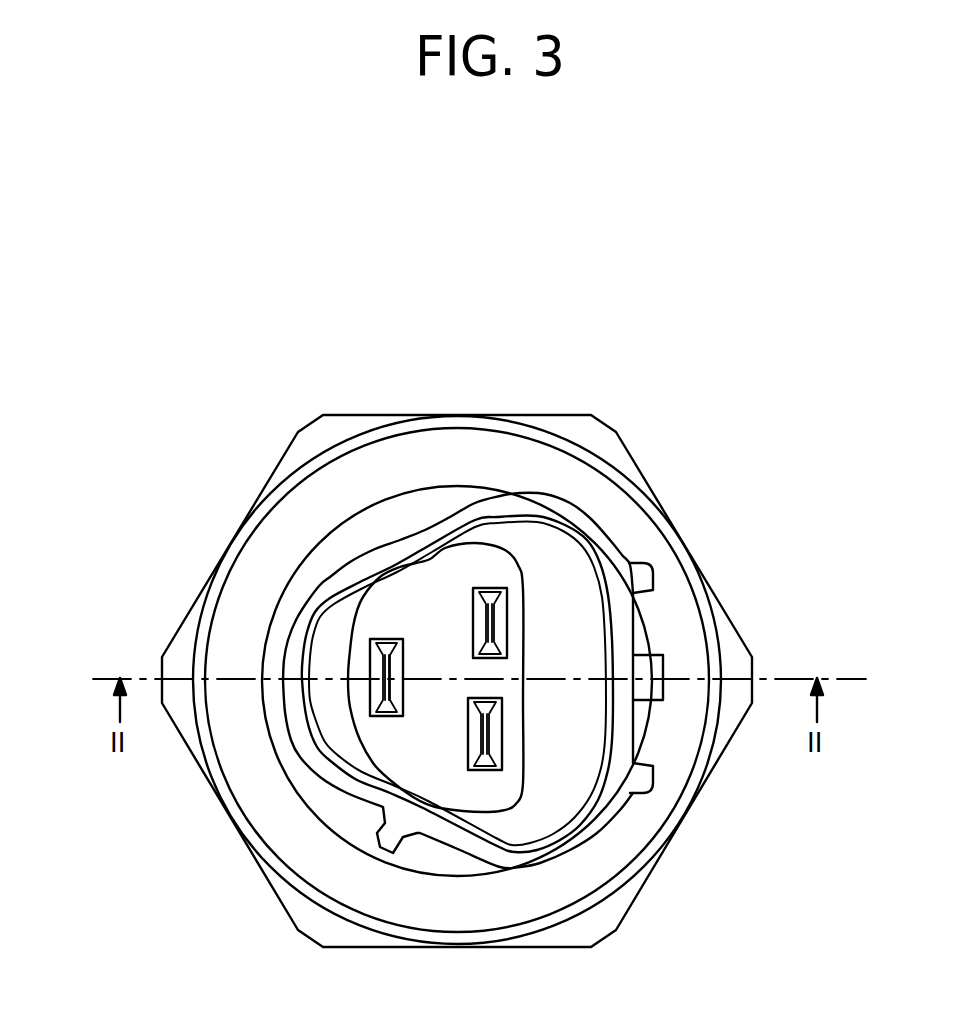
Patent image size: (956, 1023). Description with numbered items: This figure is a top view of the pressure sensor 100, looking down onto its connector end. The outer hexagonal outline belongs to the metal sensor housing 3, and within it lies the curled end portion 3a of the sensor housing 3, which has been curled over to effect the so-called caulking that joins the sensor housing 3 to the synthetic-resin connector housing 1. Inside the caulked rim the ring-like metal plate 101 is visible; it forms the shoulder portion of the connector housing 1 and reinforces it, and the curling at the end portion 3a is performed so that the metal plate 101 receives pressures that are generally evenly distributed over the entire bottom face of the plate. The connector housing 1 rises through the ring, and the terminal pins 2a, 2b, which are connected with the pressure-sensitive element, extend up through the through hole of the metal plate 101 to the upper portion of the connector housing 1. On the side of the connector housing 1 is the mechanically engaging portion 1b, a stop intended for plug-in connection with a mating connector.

The pressure sensor 100 is at (693, 270).
The metal plate 101 is at (390, 520).
The connector housing 1 is at (555, 510).
The mechanically engaging portion 1b is at (660, 667).
The terminal pin 2a is at (370, 652).
The terminal pin 2b is at (490, 588).
The sensor housing 3 is at (289, 447).
The end portion 3a is at (247, 780).